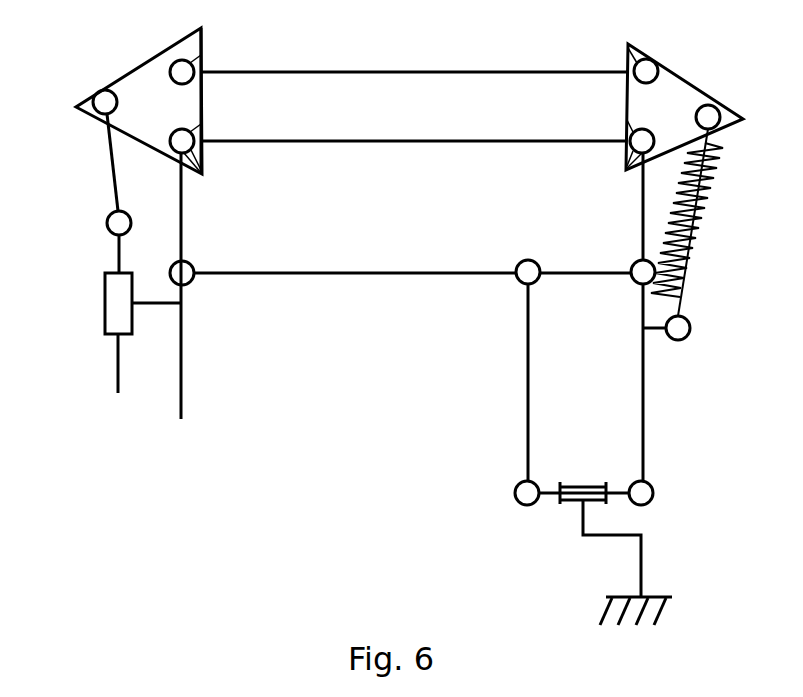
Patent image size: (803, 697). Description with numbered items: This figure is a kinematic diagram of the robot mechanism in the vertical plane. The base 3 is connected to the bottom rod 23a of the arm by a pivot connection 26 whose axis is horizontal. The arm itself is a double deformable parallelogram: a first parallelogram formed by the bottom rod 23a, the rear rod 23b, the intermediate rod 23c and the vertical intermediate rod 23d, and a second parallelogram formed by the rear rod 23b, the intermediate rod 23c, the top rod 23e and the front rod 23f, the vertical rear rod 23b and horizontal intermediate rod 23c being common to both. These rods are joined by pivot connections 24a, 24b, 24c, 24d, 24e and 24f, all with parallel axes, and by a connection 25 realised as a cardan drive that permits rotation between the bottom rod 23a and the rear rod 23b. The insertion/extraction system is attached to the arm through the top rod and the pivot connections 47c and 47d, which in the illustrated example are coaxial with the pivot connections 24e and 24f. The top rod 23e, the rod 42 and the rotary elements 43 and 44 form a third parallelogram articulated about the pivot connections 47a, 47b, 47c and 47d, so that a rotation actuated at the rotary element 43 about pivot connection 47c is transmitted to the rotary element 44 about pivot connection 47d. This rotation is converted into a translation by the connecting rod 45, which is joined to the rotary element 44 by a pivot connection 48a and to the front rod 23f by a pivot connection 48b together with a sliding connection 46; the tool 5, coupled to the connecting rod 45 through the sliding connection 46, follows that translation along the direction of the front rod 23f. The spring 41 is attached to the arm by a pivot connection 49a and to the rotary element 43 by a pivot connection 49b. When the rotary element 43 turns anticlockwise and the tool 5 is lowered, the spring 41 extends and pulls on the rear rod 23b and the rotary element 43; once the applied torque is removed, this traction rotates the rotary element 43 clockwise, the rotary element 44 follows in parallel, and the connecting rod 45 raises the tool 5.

The base 3 is at (653, 596).
The tool 5 is at (118, 383).
The bottom rod 23a is at (541, 498).
The rear rod 23b is at (643, 403).
The intermediate rod 23c is at (590, 274).
The vertical intermediate rod 23d is at (528, 355).
The top rod 23e is at (419, 141).
The front rod 23f is at (182, 195).
The pivot connection 24a is at (522, 482).
The pivot connection 24b is at (634, 261).
The pivot connection 24c is at (524, 257).
The pivot connection 24d is at (191, 263).
The pivot connection 24e is at (618, 166).
The pivot connection 24f is at (199, 156).
The connection 25 is at (655, 486).
The pivot connection 26 is at (576, 510).
The spring 41 is at (700, 223).
The rod 42 is at (400, 70).
The rotary element 43 is at (682, 95).
The rotary element 44 is at (145, 73).
The connecting rod 45 is at (113, 168).
The sliding connection 46 is at (105, 303).
The pivot connection 47a is at (195, 60).
The pivot connection 47b is at (628, 56).
The pivot connection 47c is at (627, 125).
The pivot connection 47d is at (195, 130).
The pivot connection 48a is at (97, 96).
The pivot connection 48b is at (107, 223).
The pivot connection 49a is at (691, 322).
The pivot connection 49b is at (720, 107).